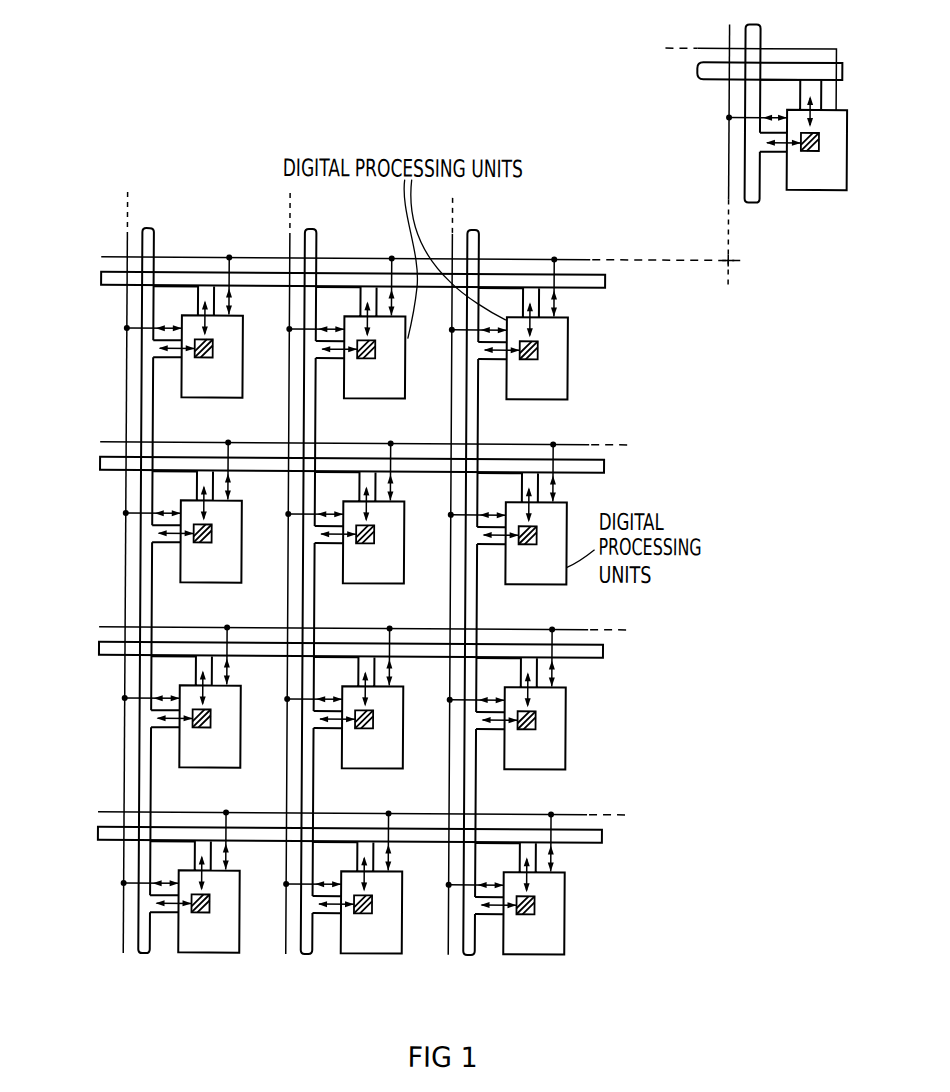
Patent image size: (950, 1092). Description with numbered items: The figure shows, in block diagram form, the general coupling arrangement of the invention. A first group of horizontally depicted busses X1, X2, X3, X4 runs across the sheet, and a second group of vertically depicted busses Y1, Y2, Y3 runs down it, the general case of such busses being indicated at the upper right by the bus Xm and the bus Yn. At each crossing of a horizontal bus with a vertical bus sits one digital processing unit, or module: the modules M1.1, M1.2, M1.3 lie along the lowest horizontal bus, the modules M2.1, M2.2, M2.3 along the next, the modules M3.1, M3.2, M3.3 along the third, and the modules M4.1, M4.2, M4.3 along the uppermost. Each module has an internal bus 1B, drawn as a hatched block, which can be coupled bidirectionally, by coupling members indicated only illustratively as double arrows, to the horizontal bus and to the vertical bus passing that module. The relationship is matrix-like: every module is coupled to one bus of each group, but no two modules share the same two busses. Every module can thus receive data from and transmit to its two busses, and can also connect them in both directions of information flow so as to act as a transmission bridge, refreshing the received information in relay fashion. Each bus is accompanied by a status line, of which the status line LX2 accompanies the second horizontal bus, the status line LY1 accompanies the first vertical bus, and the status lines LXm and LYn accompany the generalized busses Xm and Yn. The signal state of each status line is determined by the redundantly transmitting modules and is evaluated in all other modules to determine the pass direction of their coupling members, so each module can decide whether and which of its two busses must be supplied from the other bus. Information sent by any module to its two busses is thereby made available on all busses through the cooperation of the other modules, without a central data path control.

The horizontally depicted bus X1 is at (101, 833).
The horizontally depicted bus X2 is at (101, 648).
The horizontally depicted bus X3 is at (101, 463).
The horizontally depicted bus X4 is at (101, 278).
The vertically depicted bus Y1 is at (144, 954).
The vertically depicted bus Y2 is at (306, 954).
The vertically depicted bus Y3 is at (469, 954).
The status line LX2 is at (118, 625).
The status line LY1 is at (127, 933).
The digital processing unit M1.1 is at (193, 952).
The digital processing unit M1.2 is at (360, 952).
The digital processing unit M1.3 is at (520, 952).
The digital processing unit M2.1 is at (188, 767).
The digital processing unit M2.2 is at (350, 767).
The digital processing unit M2.3 is at (513, 767).
The digital processing unit M3.1 is at (188, 582).
The digital processing unit M3.2 is at (350, 582).
The digital processing unit M3.3 is at (513, 582).
The digital processing unit M4.1 is at (188, 397).
The digital processing unit M4.2 is at (350, 397).
The digital processing unit M4.3 is at (508, 344).
The internal bus 1B is at (525, 358).
The horizontally depicted bus Xm is at (716, 76).
The vertically depicted bus Yn is at (756, 199).
The status line LXm is at (789, 39).
The status line LYn is at (727, 186).